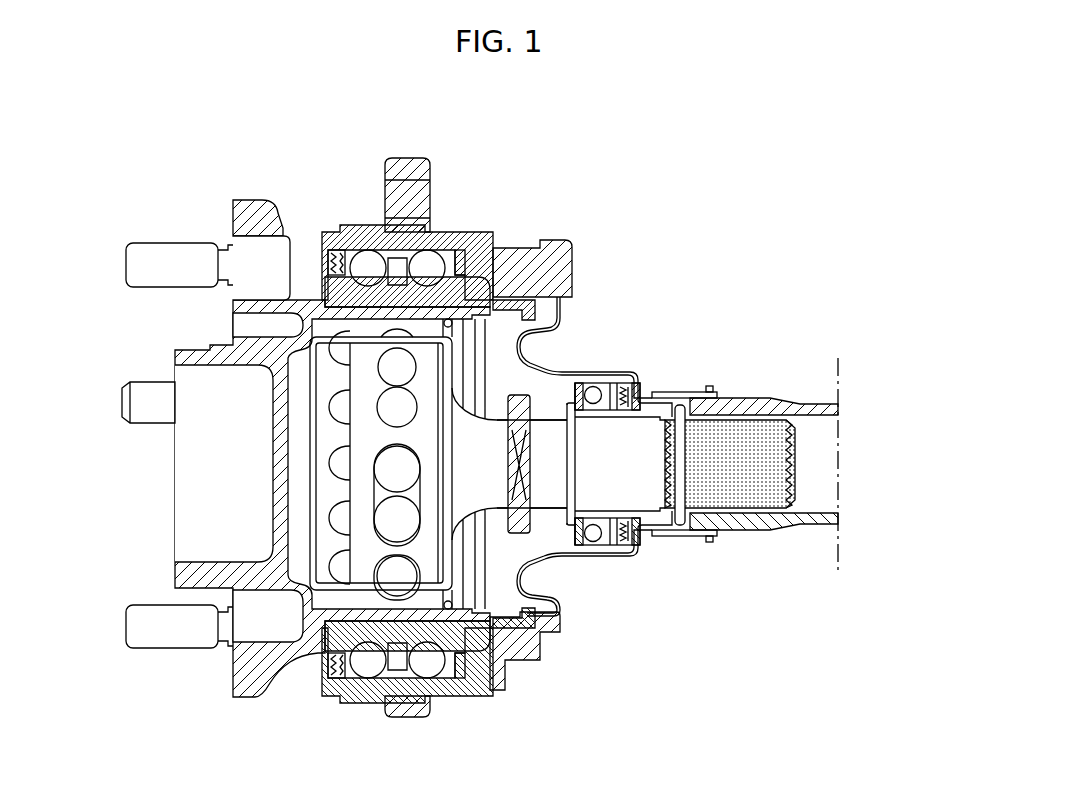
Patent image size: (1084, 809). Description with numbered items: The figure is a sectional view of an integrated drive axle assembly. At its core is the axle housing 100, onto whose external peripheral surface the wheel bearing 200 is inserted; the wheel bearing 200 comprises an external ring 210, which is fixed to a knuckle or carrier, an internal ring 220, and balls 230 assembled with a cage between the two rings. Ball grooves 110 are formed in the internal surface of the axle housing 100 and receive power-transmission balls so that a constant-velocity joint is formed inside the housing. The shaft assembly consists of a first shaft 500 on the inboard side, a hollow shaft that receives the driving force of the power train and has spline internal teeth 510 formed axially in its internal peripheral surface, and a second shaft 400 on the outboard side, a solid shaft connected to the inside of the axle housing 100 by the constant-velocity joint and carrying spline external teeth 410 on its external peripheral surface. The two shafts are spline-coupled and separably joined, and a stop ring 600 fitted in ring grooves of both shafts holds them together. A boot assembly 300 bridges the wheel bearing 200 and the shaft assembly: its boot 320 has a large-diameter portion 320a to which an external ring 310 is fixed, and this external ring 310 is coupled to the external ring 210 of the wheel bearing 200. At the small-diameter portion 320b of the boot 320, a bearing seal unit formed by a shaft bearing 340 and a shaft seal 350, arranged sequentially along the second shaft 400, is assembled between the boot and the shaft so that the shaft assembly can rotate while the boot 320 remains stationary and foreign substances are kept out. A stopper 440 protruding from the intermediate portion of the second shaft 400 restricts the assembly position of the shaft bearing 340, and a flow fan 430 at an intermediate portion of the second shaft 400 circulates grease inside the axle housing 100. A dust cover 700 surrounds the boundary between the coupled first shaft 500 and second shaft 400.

The axle housing 100 is at (312, 330).
The ball grooves 110 is at (340, 408).
The wheel bearing 200 is at (447, 404).
The external ring 210 is at (405, 230).
The internal ring 220 is at (470, 278).
The ball 230 is at (428, 268).
The boot assembly 300 is at (623, 444).
The external ring 310 is at (505, 282).
The boot 320 is at (542, 353).
The large-diameter portion 320a is at (537, 294).
The small-diameter portion 320b is at (622, 373).
The shaft bearing 340 is at (597, 545).
The shaft seal 350 is at (624, 540).
The second shaft 400 is at (750, 500).
The spline external teeth 410 is at (788, 473).
The flow fan 430 is at (517, 540).
The stopper 440 is at (572, 515).
The first shaft 500 is at (808, 405).
The spline internal teeth 510 is at (788, 448).
The stop ring 600 is at (690, 462).
The dust cover 700 is at (708, 392).